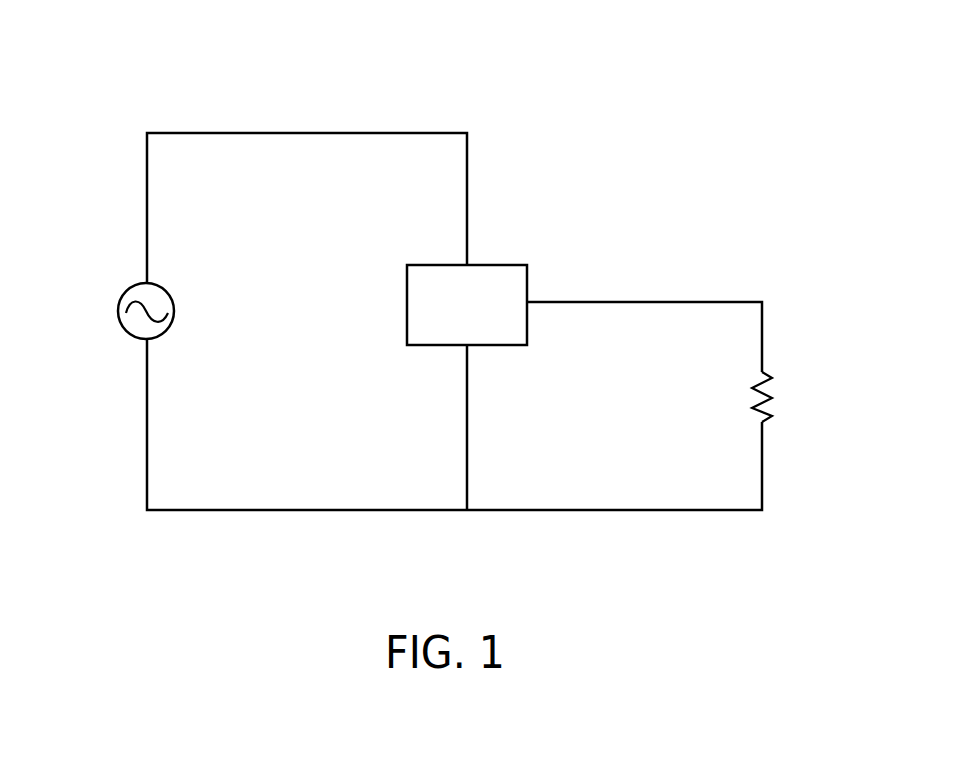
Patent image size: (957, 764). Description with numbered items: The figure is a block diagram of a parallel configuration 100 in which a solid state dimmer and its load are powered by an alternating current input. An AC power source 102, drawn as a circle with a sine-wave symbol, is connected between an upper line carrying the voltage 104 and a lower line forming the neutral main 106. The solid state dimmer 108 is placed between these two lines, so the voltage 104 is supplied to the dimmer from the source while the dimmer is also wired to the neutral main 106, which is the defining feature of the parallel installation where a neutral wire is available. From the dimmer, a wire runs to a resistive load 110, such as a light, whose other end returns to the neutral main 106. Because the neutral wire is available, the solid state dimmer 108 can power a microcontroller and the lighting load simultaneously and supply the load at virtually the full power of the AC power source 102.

The parallel configuration 100 is at (643, 88).
The AC power source 102 is at (127, 335).
The voltage 104 is at (147, 145).
The neutral main 106 is at (147, 502).
The solid state dimmer 108 is at (528, 267).
The resistive load 110 is at (765, 370).